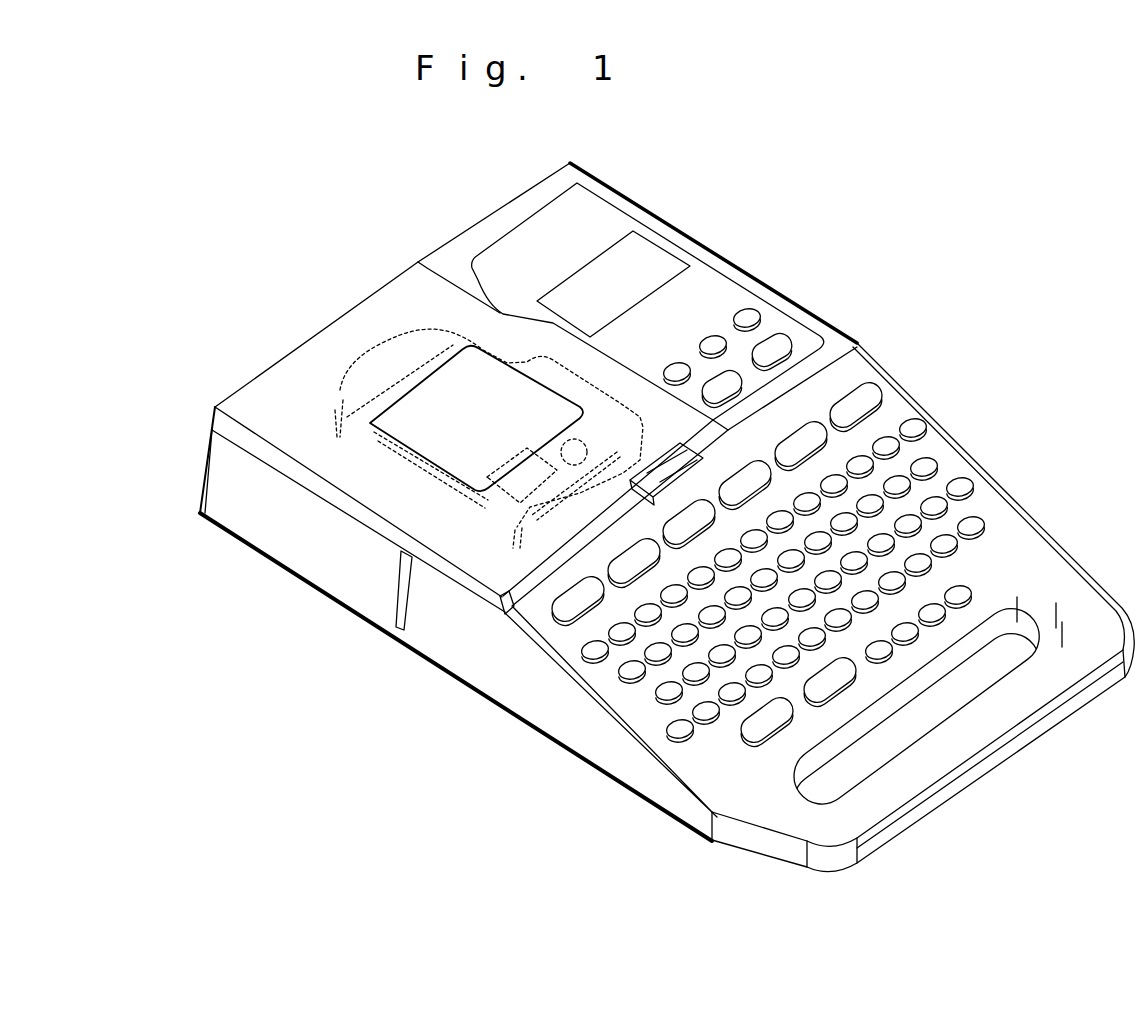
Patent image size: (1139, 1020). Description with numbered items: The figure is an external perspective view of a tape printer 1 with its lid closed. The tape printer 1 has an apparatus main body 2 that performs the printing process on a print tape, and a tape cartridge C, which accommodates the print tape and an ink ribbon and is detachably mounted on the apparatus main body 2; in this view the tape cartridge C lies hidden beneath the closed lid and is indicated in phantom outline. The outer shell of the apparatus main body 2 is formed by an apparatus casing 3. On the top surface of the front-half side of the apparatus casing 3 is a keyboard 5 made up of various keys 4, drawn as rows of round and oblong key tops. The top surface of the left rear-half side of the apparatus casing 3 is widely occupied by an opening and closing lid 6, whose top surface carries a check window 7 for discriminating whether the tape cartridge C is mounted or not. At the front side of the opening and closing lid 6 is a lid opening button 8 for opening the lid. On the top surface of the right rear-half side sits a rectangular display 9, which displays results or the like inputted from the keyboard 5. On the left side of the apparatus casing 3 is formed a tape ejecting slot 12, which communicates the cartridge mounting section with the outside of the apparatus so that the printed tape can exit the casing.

The tape printer 1 is at (477, 221).
The apparatus main body 2 is at (647, 208).
The apparatus casing 3 is at (232, 485).
The keys 4 is at (905, 480).
The keyboard 5 is at (993, 503).
The opening and closing lid 6 is at (353, 335).
The check window 7 is at (467, 430).
The lid opening button 8 is at (503, 613).
The display 9 is at (657, 263).
The tape ejecting slot 12 is at (395, 602).
The tape cartridge C is at (327, 395).